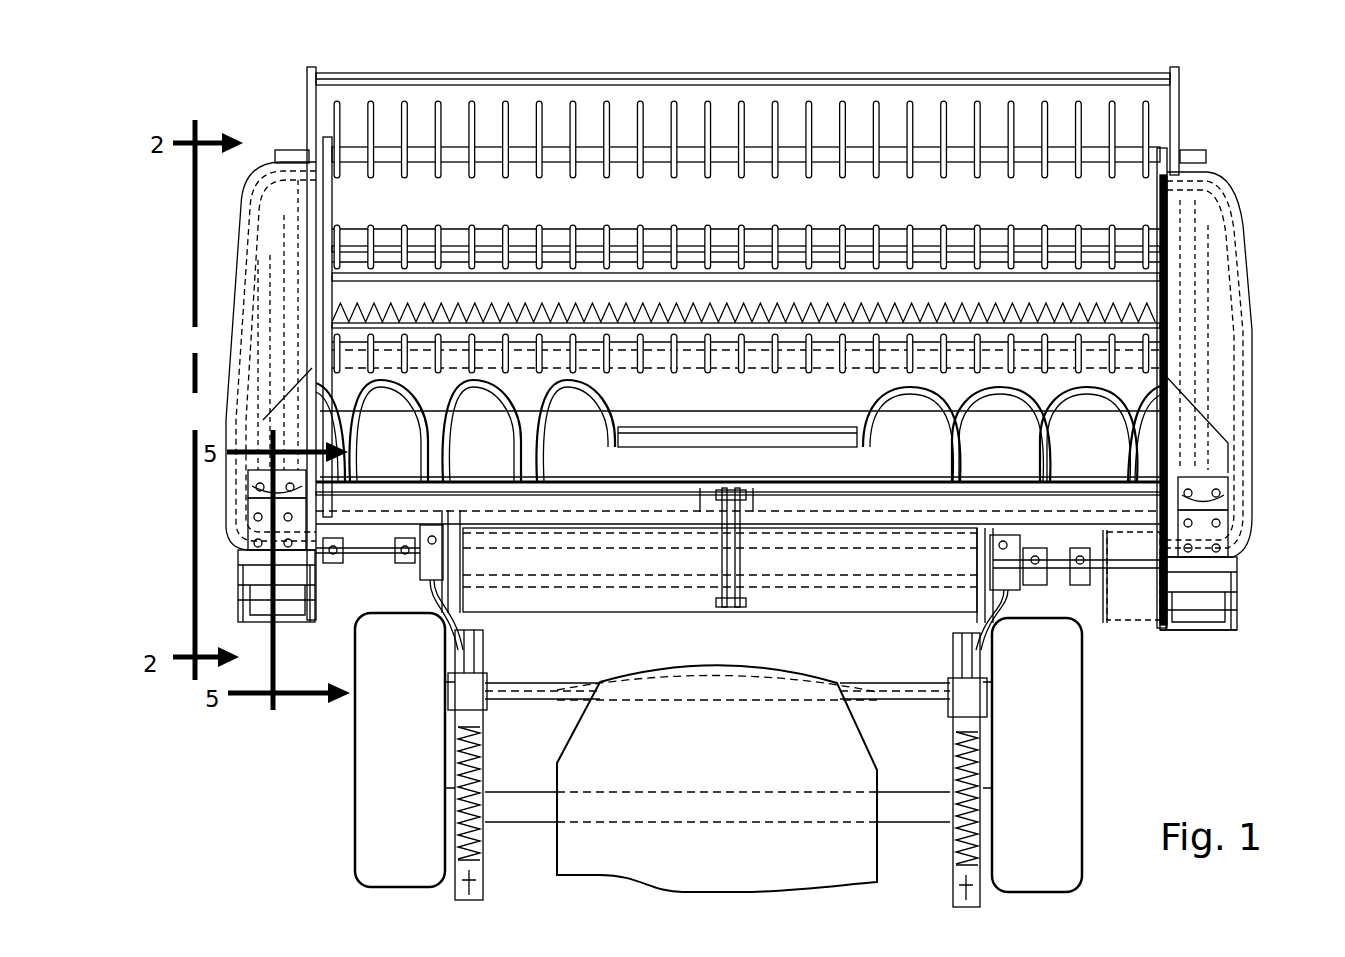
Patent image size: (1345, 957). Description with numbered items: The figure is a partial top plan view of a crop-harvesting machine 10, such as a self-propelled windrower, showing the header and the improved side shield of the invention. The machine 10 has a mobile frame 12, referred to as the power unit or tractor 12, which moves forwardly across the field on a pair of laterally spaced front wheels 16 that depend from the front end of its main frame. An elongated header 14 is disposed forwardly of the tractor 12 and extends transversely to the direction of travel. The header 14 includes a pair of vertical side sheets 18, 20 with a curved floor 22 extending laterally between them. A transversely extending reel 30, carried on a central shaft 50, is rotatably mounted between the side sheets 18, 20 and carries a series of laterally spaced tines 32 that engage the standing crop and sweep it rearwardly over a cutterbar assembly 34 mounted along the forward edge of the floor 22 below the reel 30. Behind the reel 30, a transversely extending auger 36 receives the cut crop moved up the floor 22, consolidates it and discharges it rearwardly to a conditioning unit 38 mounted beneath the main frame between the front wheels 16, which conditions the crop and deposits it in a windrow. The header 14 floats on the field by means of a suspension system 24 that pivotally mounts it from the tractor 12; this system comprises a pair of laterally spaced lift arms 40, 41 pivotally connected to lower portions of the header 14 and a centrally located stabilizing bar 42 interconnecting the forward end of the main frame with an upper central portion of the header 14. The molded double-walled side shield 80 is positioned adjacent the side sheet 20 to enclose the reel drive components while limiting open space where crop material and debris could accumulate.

The crop-harvesting machine 10 is at (1190, 672).
The mobile frame 12 is at (752, 771).
The header 14 is at (1243, 134).
The front wheels 16 is at (373, 795).
The side sheet 18 is at (307, 90).
The side sheet 20 is at (1179, 100).
The floor 22 is at (746, 372).
The suspension system 24 is at (487, 766).
The reel 30 is at (332, 198).
The tines 32 is at (440, 110).
The cutterbar assembly 34 is at (712, 308).
The auger 36 is at (582, 456).
The conditioning unit 38 is at (633, 620).
The lift arm 40 is at (432, 595).
The lift arm 41 is at (1008, 603).
The stabilizing bar 42 is at (735, 565).
The central shaft 50 is at (452, 242).
The side shield 80 is at (225, 345).